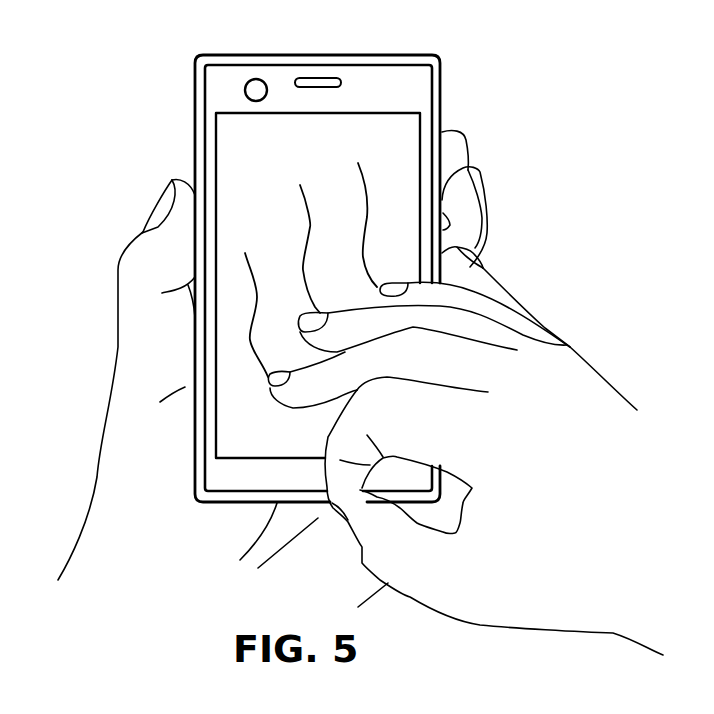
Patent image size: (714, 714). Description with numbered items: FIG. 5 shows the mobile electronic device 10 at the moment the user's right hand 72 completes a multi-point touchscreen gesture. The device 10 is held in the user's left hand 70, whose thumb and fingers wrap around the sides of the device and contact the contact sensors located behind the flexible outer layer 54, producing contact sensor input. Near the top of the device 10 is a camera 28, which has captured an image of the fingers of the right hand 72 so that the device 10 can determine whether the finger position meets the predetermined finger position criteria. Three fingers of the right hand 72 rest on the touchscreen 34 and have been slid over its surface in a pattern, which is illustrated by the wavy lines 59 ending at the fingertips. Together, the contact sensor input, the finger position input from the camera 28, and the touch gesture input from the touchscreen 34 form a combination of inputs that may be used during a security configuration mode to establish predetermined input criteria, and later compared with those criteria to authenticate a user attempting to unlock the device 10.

The mobile electronic device 10 is at (313, 253).
The camera 28 is at (255, 78).
The touchscreen 34 is at (393, 140).
The flexible outer layer 54 is at (193, 149).
The wavy lines 59 is at (256, 297).
The left hand 70 is at (102, 445).
The right hand 72 is at (560, 323).